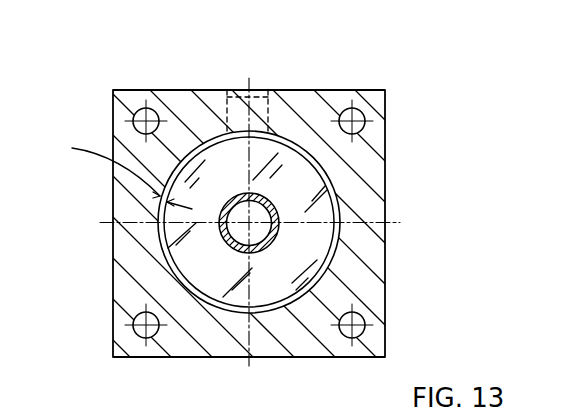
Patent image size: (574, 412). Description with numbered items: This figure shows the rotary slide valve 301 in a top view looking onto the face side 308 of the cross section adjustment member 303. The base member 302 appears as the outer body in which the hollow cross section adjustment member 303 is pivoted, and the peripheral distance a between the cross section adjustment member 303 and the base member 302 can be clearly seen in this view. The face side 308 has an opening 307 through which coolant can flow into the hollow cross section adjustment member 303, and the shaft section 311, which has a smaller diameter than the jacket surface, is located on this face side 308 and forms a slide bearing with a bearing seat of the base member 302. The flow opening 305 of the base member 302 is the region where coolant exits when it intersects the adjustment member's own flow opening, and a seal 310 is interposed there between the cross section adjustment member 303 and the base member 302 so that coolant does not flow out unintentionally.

The rotary slide valve 301 is at (67, 61).
The base member 302 is at (310, 97).
The cross section adjustment member 303 is at (201, 273).
The flow opening 305 is at (261, 90).
The opening 307 is at (258, 236).
The face side 308 is at (297, 177).
The seal 310 is at (218, 137).
The shaft section 311 is at (283, 235).